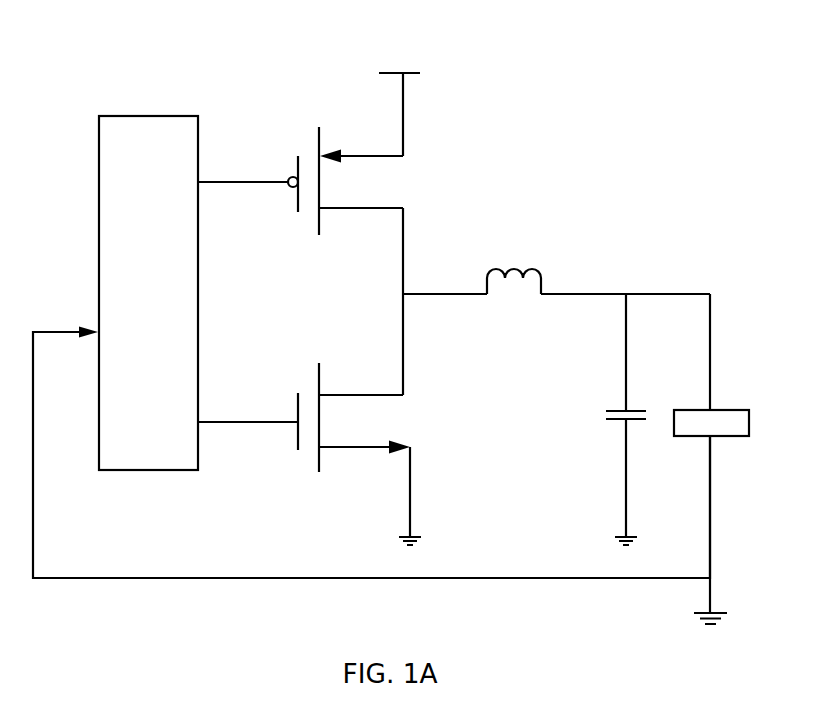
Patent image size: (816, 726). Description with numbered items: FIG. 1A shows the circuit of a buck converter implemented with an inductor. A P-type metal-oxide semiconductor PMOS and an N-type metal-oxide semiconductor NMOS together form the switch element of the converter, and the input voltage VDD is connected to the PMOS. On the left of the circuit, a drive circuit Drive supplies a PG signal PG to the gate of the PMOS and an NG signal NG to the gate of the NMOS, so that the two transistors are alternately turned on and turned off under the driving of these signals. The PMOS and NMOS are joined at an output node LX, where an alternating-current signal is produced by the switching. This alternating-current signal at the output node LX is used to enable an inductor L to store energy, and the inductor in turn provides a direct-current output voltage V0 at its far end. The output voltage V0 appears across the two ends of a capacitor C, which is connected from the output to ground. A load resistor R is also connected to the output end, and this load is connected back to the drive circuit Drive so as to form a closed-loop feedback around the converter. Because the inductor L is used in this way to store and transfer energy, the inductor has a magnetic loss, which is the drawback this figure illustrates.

The drive circuit Drive is at (148, 293).
The PG signal PG is at (248, 170).
The NG signal NG is at (248, 405).
The P-type metal-oxide semiconductor PMOS is at (394, 181).
The N-type metal-oxide semiconductor NMOS is at (390, 454).
The input voltage VDD is at (402, 97).
The output node LX is at (445, 301).
The inductor L is at (514, 266).
The direct-current output voltage V0 is at (625, 276).
The capacitor C is at (626, 419).
The load resistor R is at (711, 459).